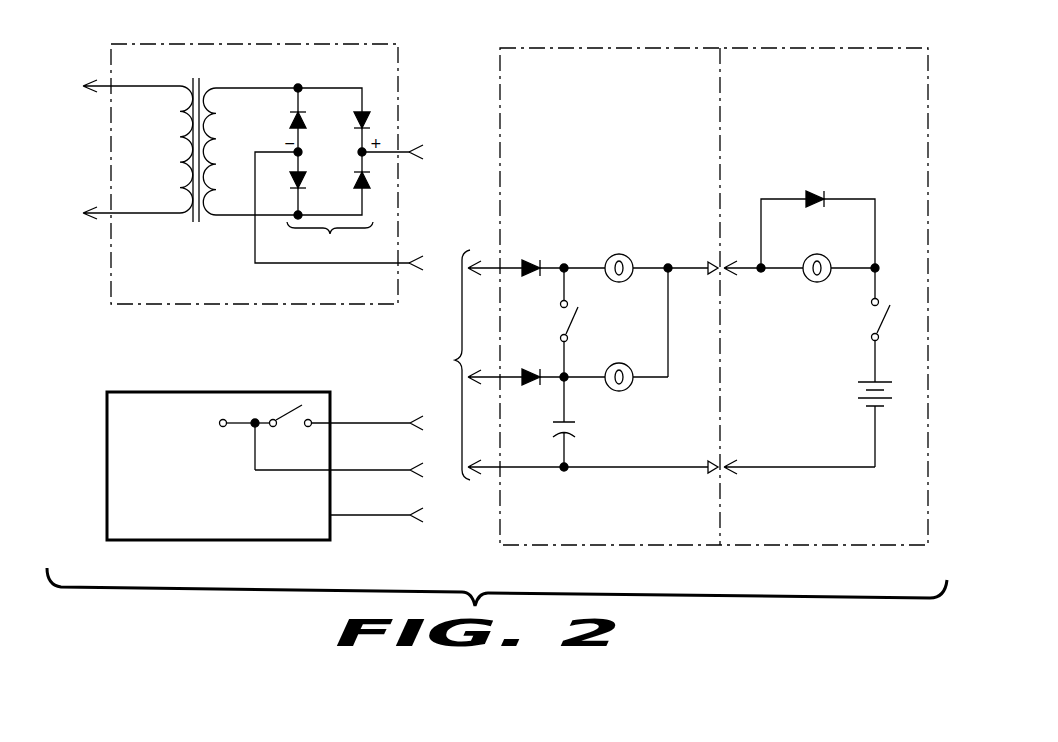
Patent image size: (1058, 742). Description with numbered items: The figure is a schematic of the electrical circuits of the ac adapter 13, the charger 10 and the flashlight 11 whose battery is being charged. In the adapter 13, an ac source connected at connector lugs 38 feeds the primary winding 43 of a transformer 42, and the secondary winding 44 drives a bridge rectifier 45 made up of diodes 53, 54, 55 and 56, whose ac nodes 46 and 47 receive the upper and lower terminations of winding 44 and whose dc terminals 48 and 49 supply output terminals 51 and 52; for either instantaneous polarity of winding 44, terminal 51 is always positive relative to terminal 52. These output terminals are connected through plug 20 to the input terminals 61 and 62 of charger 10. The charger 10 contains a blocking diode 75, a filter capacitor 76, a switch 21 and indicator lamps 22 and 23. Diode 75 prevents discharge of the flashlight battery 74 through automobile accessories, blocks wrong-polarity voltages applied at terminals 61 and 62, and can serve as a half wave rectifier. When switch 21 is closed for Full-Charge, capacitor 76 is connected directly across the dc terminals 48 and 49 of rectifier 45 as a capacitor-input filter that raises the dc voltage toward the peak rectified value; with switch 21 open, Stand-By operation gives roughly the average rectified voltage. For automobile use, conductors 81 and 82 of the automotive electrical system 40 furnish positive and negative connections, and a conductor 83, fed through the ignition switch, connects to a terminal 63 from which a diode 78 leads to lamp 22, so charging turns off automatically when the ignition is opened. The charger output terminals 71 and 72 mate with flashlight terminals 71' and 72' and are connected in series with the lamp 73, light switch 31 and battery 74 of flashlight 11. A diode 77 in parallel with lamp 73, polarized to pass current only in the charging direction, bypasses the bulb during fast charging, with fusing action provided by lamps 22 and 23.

The charger 10 is at (545, 546).
The flashlight 11 is at (777, 540).
The ac adapter 13 is at (303, 305).
The plug 20 is at (439, 363).
The switch 21 is at (578, 320).
The indicator lamp 22 is at (624, 390).
The indicator lamp 23 is at (620, 254).
The light switch 31 is at (881, 330).
The connector lugs 38 is at (90, 93).
The automotive electrical system 40 is at (300, 386).
The transformer 42 is at (181, 230).
The primary winding 43 is at (180, 150).
The secondary winding 44 is at (220, 148).
The bridge rectifier 45 is at (330, 241).
The ac terminal of bridge rectifier 46 is at (302, 86).
The ac terminal of bridge rectifier 47 is at (296, 219).
The dc terminal of bridge rectifier 48 is at (366, 160).
The dc terminal of bridge rectifier 49 is at (254, 250).
The output terminal 51 is at (418, 147).
The output terminal 52 is at (416, 259).
The diode 53 is at (288, 120).
The diode 54 is at (356, 120).
The diode 55 is at (288, 180).
The diode 56 is at (352, 180).
The input terminal 61 is at (481, 264).
The input terminal 62 is at (480, 464).
The terminal 63 is at (480, 374).
The output terminal 71 is at (702, 252).
The flashlight terminal 71' is at (763, 254).
The output terminal 72 is at (701, 451).
The flashlight terminal 72' is at (799, 453).
The lamp 73 is at (816, 283).
The battery 74 is at (854, 400).
The blocking diode 75 is at (532, 263).
The filter capacitor 76 is at (556, 422).
The diode 77 is at (814, 197).
The diode 78 is at (530, 373).
The conductor 81 is at (361, 476).
The conductor 82 is at (361, 521).
The conductor 83 is at (364, 428).